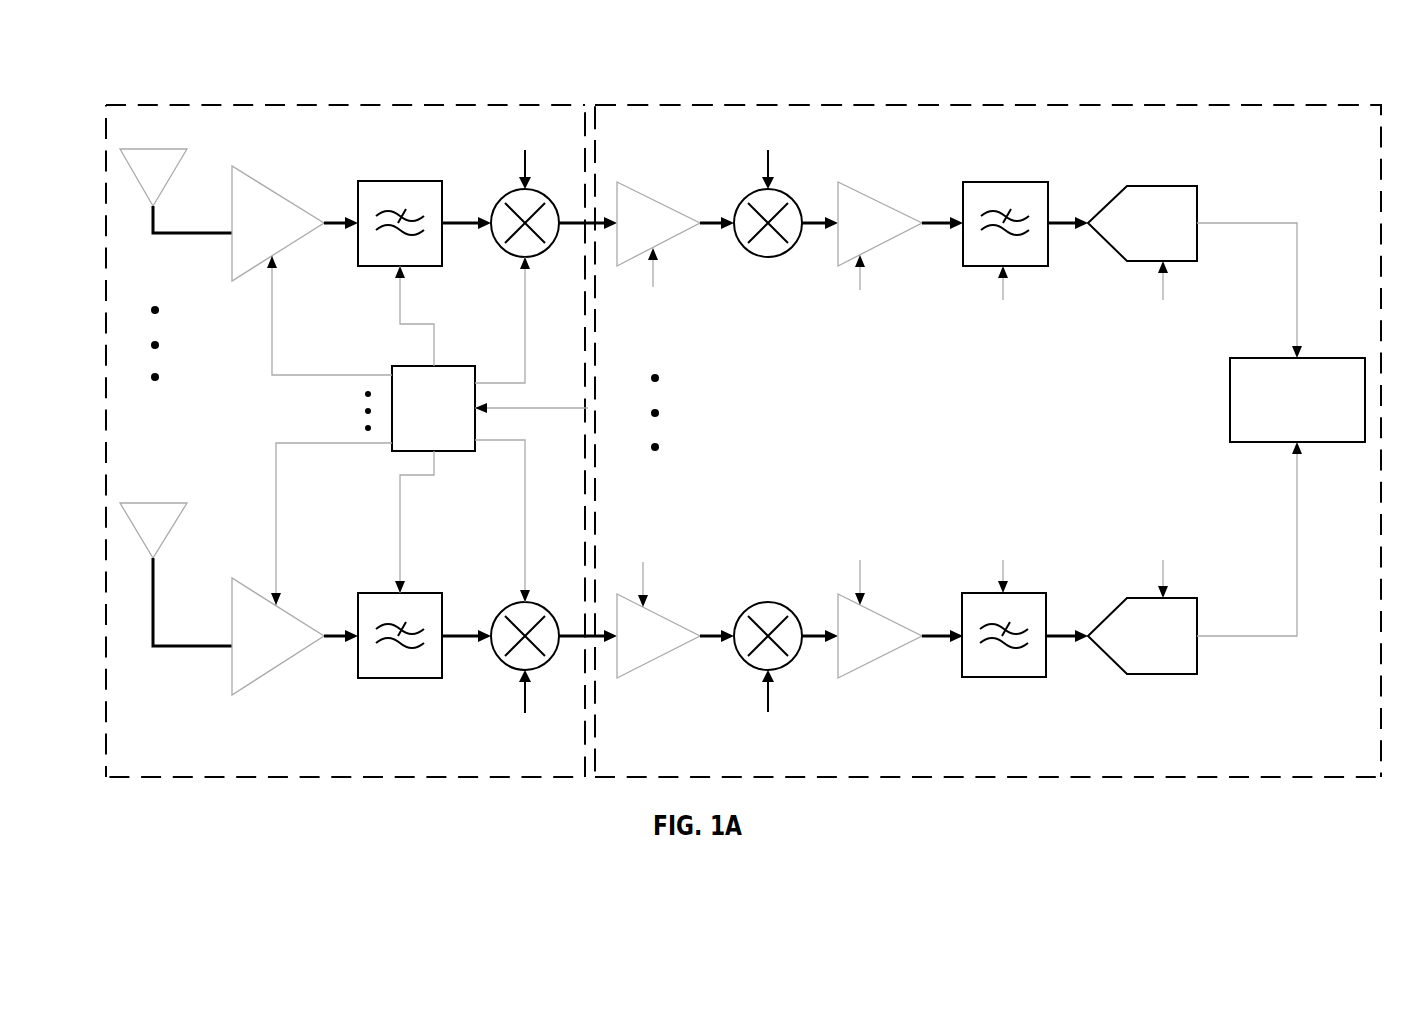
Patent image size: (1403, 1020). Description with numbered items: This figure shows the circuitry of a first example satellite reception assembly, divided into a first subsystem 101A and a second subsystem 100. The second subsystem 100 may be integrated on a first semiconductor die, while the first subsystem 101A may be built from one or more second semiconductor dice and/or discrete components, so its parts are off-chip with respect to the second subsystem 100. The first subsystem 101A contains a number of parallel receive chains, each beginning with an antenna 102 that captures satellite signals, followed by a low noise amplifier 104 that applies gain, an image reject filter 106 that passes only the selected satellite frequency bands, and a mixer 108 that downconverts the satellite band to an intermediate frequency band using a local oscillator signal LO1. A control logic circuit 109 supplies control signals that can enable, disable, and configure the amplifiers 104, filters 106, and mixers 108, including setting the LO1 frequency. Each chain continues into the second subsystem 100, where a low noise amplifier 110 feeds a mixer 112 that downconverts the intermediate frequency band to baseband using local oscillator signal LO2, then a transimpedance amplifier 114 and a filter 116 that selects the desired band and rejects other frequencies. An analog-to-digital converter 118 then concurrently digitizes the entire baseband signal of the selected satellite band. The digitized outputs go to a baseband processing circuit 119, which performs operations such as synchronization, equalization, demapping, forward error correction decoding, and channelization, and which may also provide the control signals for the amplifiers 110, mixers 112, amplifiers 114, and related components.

The second subsystem 100 is at (1016, 106).
The first subsystem 101A is at (366, 97).
The antennas 102 is at (171, 139).
The amplifiers 104 is at (266, 173).
The filters 106 is at (424, 172).
The mixers 108 is at (553, 188).
The control logic circuit 109 is at (458, 366).
The amplifiers 110 is at (666, 192).
The mixers 112 is at (799, 192).
The amplifiers 114 is at (888, 192).
The filters 116 is at (1029, 172).
The analog-to-digital converters 118 is at (1179, 177).
The baseband processing circuit 119 is at (1332, 358).